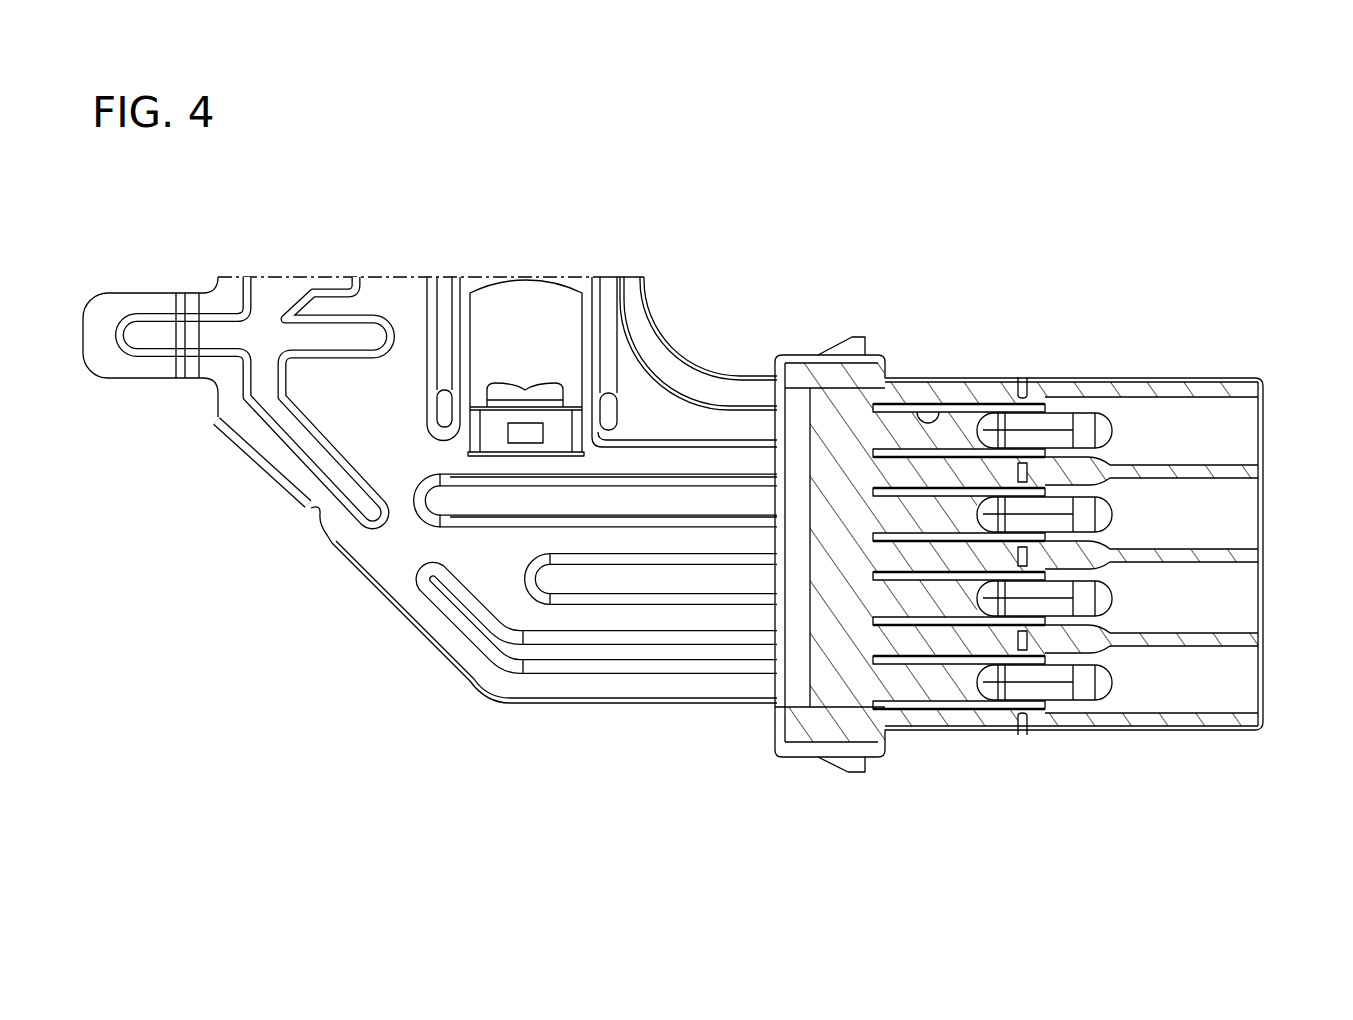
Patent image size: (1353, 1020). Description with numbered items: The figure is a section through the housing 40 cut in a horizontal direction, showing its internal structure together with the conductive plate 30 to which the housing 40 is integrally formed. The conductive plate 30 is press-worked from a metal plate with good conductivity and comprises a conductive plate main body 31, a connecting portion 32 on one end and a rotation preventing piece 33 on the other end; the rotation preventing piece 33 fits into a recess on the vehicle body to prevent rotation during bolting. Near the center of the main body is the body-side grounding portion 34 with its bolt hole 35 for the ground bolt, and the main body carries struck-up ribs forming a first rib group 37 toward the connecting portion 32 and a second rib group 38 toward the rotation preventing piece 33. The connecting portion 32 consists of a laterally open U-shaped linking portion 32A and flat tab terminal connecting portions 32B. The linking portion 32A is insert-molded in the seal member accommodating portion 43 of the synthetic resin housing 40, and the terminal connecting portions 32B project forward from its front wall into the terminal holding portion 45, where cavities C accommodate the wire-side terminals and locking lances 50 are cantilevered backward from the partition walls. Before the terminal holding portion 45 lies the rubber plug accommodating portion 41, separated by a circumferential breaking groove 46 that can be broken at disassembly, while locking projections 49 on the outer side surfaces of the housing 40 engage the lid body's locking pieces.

The conductive plate 30 is at (430, 488).
The conductive plate main body 31 is at (470, 690).
The connecting portion 32 is at (866, 372).
The linking portion 32A is at (842, 437).
The terminal connecting portion 32B is at (1073, 430).
The rotation preventing piece 33 is at (120, 365).
The body-side grounding portion 34 is at (490, 278).
The bolt hole 35 is at (472, 345).
The first rib group 37 is at (660, 680).
The second rib group 38 is at (287, 472).
The housing 40 is at (1047, 508).
The rubber plug accommodating portion 41 is at (1200, 378).
The seal member accommodating portion 43 is at (805, 372).
The terminal holding portion 45 is at (957, 385).
The breaking groove 46 is at (1023, 377).
The locking projection 49 is at (856, 337).
The locking lance 50 is at (1000, 418).
The cavity C is at (917, 403).